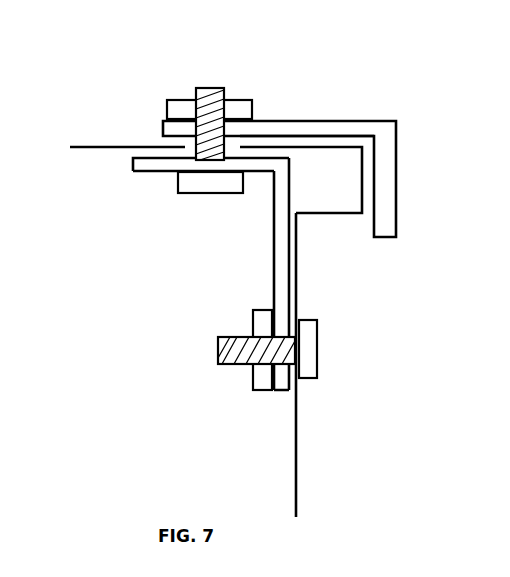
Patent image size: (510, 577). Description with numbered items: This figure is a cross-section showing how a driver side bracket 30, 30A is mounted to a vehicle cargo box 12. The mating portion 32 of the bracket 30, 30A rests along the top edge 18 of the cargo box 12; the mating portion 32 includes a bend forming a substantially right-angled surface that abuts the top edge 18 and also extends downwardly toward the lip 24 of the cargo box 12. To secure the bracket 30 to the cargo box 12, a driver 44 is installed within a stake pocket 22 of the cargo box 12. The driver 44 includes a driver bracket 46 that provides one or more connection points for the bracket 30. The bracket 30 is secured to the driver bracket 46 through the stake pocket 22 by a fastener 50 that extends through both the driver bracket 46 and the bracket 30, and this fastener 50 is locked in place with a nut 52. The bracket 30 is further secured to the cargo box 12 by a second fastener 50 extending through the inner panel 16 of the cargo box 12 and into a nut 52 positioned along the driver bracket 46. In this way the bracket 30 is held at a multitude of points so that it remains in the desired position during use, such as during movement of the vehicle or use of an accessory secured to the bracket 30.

The cargo box 12 is at (202, 163).
The inner panel 16 is at (297, 443).
The top edge 18 is at (90, 144).
The stake pocket 22 is at (243, 147).
The lip 24 is at (337, 197).
The driver side bracket 30 is at (328, 149).
The driver side bracket 30A is at (328, 149).
The mating portion 32 is at (330, 131).
The driver 44 is at (192, 274).
The driver bracket 46 is at (158, 168).
The fastener 50 is at (208, 186).
The nut 52 is at (184, 108).